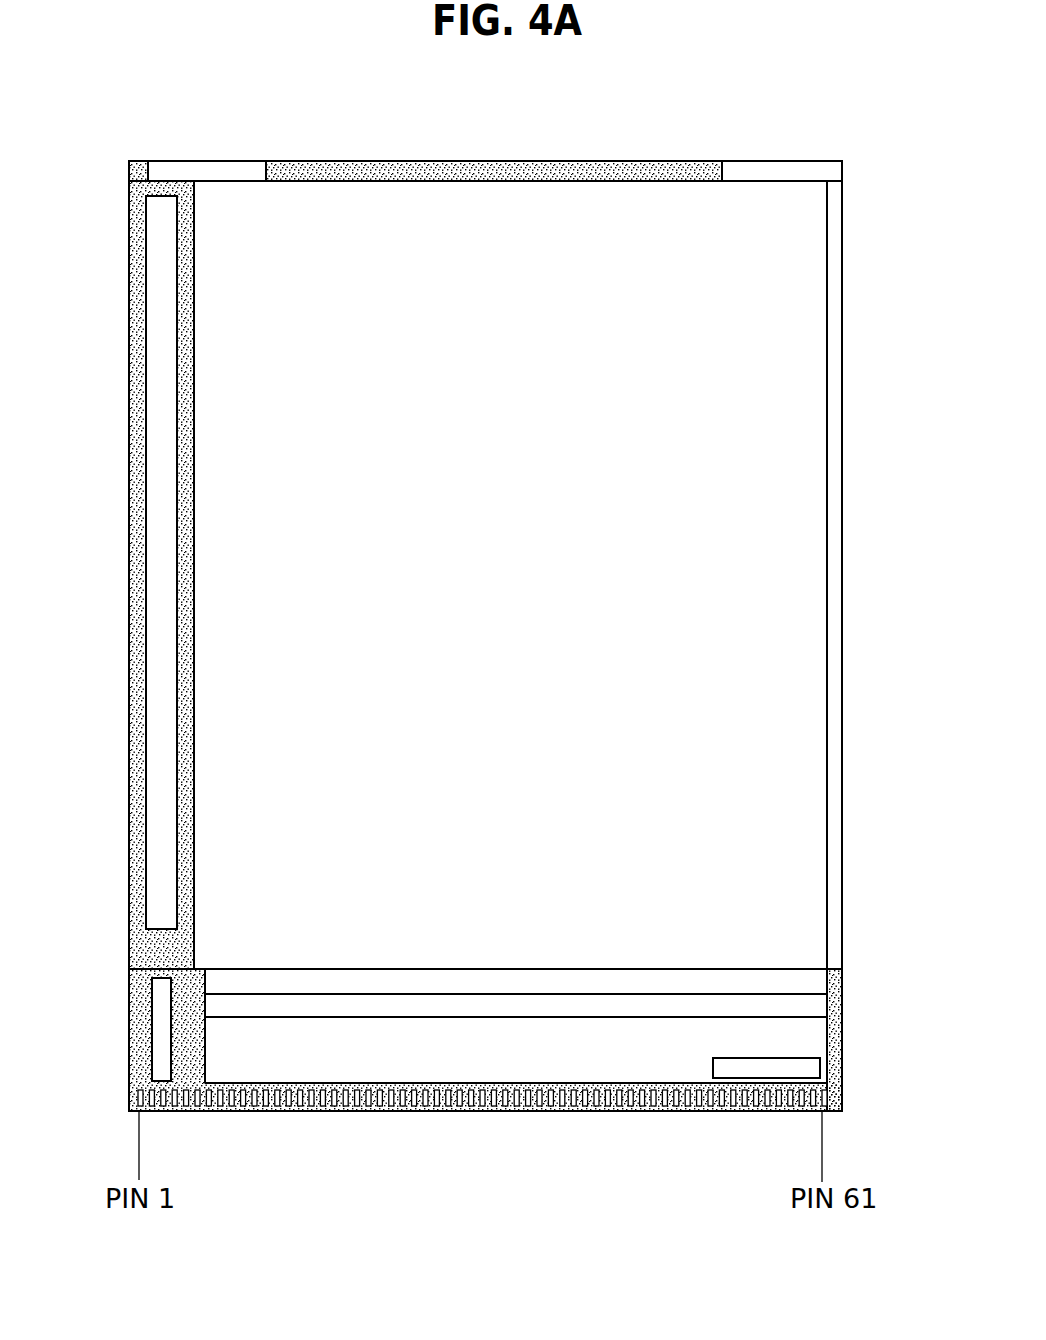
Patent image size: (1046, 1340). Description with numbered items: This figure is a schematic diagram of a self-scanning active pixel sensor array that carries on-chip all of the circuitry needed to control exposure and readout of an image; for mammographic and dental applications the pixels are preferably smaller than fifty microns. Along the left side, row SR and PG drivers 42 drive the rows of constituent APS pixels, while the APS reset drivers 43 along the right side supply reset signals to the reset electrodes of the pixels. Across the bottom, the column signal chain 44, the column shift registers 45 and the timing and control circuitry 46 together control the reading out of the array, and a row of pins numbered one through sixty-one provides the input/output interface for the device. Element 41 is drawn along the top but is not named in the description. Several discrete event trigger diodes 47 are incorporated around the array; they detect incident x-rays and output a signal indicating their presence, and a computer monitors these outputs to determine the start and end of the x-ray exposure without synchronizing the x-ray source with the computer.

The top frame member 41 is at (680, 210).
The row SR & PG drivers 42 is at (155, 847).
The APS reset drivers 43 is at (842, 840).
The column signal chain 44 is at (810, 988).
The column shift registers 45 is at (822, 1009).
The timing and control circuitry 46 is at (358, 1058).
The event trigger diodes 47 is at (237, 167).